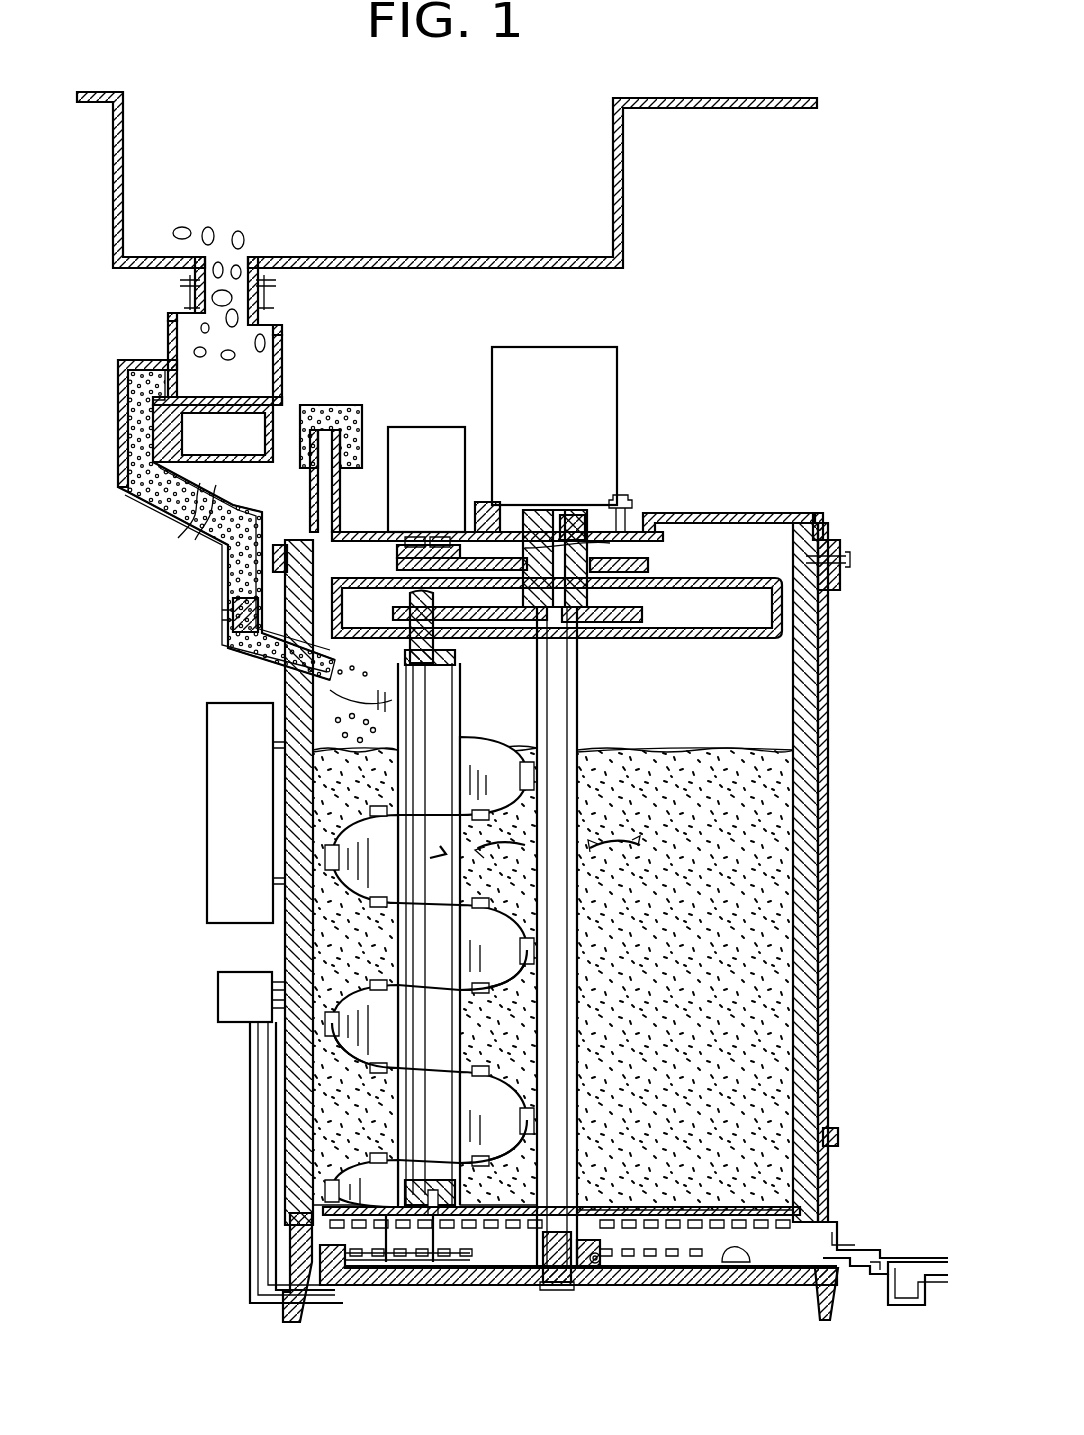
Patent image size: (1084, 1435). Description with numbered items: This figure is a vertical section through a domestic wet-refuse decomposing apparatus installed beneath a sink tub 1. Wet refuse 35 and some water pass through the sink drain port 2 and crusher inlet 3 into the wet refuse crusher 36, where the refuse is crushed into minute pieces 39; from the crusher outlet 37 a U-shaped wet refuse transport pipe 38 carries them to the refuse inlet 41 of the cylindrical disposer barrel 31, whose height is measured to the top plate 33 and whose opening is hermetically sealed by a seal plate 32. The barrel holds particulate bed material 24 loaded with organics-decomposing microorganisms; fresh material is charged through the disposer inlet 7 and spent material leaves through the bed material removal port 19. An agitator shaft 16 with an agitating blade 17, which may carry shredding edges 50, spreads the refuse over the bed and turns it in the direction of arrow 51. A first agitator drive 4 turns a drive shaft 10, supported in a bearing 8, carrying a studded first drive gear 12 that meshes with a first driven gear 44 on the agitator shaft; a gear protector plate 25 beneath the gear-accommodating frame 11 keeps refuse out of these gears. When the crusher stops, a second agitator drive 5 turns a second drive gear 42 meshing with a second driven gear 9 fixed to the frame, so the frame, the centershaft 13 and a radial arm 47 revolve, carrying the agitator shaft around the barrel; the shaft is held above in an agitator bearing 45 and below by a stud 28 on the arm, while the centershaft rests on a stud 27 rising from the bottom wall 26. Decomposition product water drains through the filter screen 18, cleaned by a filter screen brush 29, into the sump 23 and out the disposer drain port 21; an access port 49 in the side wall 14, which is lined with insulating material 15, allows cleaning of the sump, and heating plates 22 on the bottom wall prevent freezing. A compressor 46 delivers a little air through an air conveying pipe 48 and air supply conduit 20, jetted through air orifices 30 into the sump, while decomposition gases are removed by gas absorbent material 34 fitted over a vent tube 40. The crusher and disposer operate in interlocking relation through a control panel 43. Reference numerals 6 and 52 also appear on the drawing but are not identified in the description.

The sink tub 1 is at (624, 172).
The sink drain port 2 is at (258, 244).
The crusher inlet 3 is at (270, 308).
The first agitator drive 4 is at (606, 378).
The second agitator drive 5 is at (424, 436).
The mounting bolt 6 is at (621, 498).
The disposer inlet 7 is at (734, 514).
The bearing 8 is at (612, 544).
The second driven gear 9 is at (652, 563).
The drive shaft 10 is at (589, 630).
The gear-accommodating frame 11 is at (790, 613).
The first drive gear 12 is at (645, 614).
The centershaft 13 is at (578, 664).
The side wall 14 is at (828, 745).
The insulating material 15 is at (820, 835).
The agitator shaft 16 is at (462, 712).
The agitating blade 17 is at (500, 766).
The filter screen 18 is at (792, 1214).
The bed material removal port 19 is at (838, 1138).
The air supply conduit 20 is at (736, 1266).
The disposer drain port 21 is at (880, 1266).
The heating plates 22 is at (500, 1288).
The sump 23 is at (784, 1250).
The particulate bed material 24 is at (688, 1200).
The gear protector plate 25 is at (490, 641).
The bottom wall 26 is at (588, 1285).
The stud 27 is at (560, 1292).
The stud 28 is at (433, 1262).
The filter screen brush 29 is at (398, 1262).
The air orifices 30 is at (360, 1284).
The wet refuse disposer barrel 31 is at (692, 702).
The seal plate 32 is at (580, 520).
The top plate 33 is at (368, 532).
The gas absorbent material 34 is at (324, 405).
The wet refuse 35 is at (207, 226).
The wet refuse crusher 36 is at (212, 378).
The outlet 37 is at (120, 364).
The wet refuse transport pipe 38 is at (130, 498).
The minute pieces 39 is at (205, 546).
The vent tube 40 is at (312, 498).
The refuse inlet 41 is at (240, 655).
The second drive gear 42 is at (396, 561).
The control panel 43 is at (207, 841).
The first driven gear 44 is at (392, 613).
The agitator bearing 45 is at (398, 696).
The compressor 46 is at (228, 978).
The radial arm 47 is at (510, 1166).
The air conveying pipe 48 is at (250, 1186).
The access port 49 is at (285, 1250).
The shredding edges 50 is at (380, 1062).
The arrow 51 is at (475, 985).
The granular material 52 is at (600, 830).